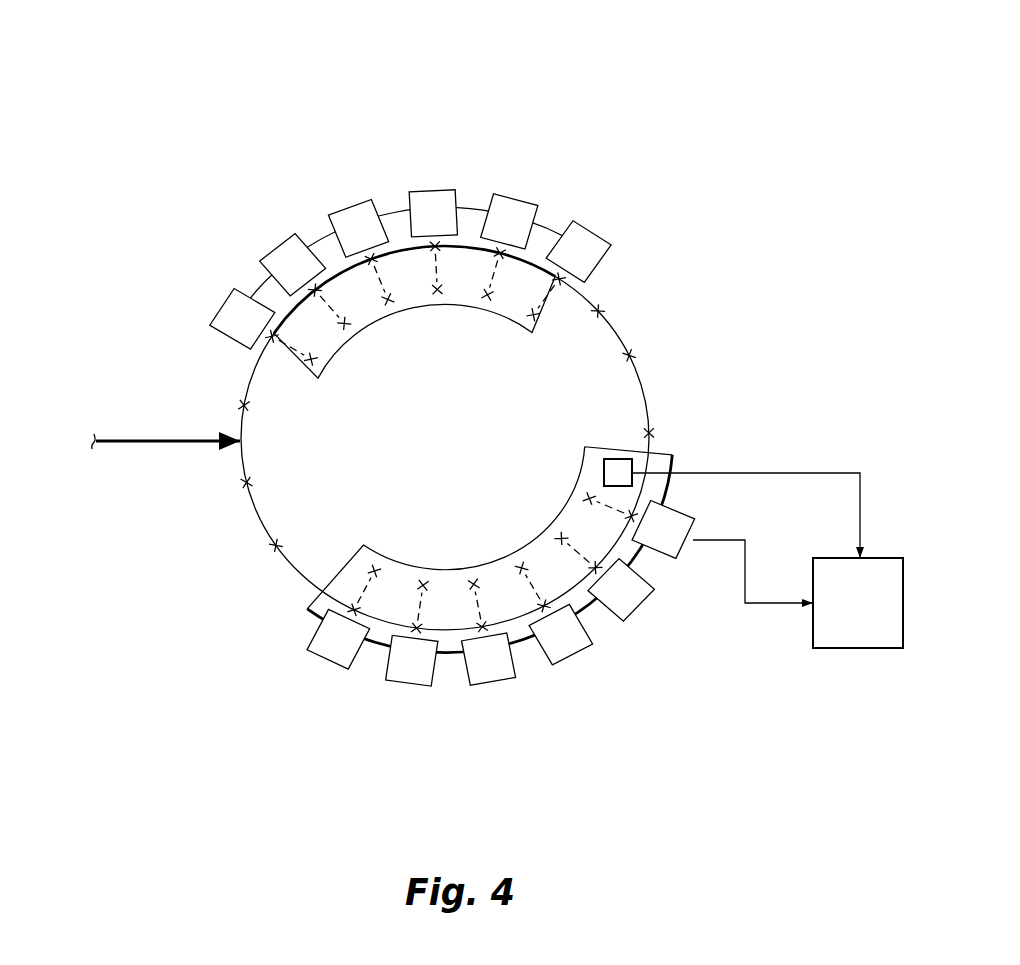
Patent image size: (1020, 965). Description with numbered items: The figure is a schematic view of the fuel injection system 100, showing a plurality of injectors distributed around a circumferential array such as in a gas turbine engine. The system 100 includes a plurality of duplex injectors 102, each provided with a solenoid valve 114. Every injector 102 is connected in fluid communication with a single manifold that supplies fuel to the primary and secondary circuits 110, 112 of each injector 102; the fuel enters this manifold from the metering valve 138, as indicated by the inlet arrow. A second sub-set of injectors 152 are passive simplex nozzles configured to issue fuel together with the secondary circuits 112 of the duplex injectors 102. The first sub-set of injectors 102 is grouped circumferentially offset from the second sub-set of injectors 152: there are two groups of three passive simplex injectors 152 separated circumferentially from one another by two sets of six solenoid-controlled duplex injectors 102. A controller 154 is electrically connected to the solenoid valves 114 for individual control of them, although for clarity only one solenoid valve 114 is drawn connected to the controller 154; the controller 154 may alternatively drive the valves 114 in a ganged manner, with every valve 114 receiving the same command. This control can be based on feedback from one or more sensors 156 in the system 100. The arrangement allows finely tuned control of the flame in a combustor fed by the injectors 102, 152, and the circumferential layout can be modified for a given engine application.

The system 100 is at (164, 136).
The duplex injector 102 is at (287, 350).
The primary circuit 110 is at (562, 296).
The secondary circuit 112 is at (404, 304).
The solenoid valve 114 is at (270, 248).
The metering valve 138 is at (130, 429).
The passive simplex injector 152 is at (641, 349).
The controller 154 is at (857, 650).
The sensor 156 is at (614, 459).